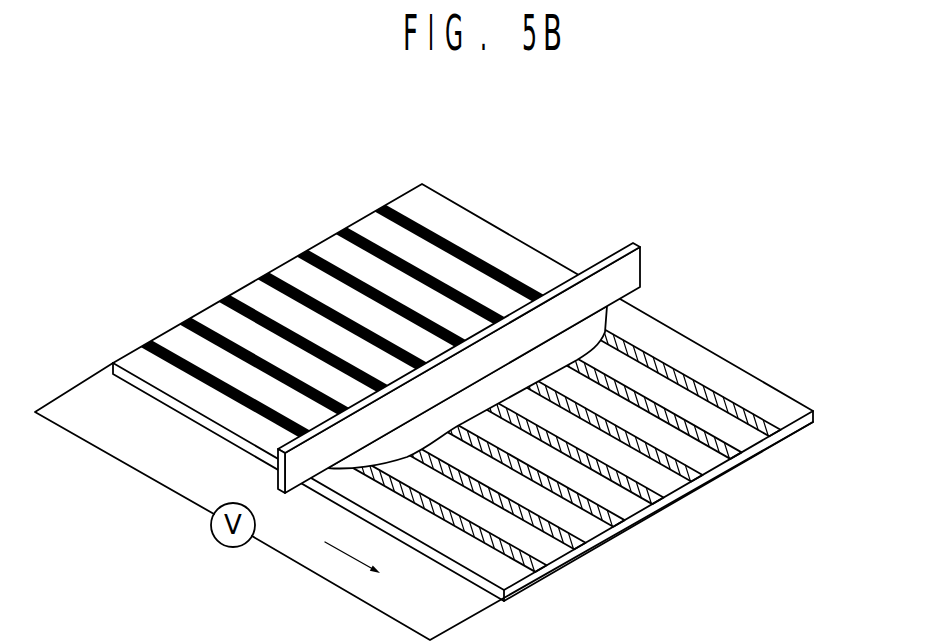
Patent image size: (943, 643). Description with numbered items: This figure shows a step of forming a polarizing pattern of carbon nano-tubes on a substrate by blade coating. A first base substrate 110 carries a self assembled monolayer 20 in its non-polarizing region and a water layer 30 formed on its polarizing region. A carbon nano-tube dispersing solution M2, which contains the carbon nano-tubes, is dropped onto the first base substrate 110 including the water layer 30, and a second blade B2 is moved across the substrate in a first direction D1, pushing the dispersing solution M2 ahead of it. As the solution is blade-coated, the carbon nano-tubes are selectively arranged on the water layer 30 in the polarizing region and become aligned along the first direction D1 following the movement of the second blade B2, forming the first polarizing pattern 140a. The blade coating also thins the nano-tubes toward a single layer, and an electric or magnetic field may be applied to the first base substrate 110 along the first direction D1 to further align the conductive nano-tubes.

The first polarizing pattern 140a is at (425, 231).
The self assembled monolayer 20 is at (453, 272).
The second blade B2 is at (641, 265).
The carbon nano-tube dispersing solution M2 is at (588, 332).
The water layer 30 is at (727, 397).
The first base substrate 110 is at (813, 412).
The first direction D1 is at (366, 571).